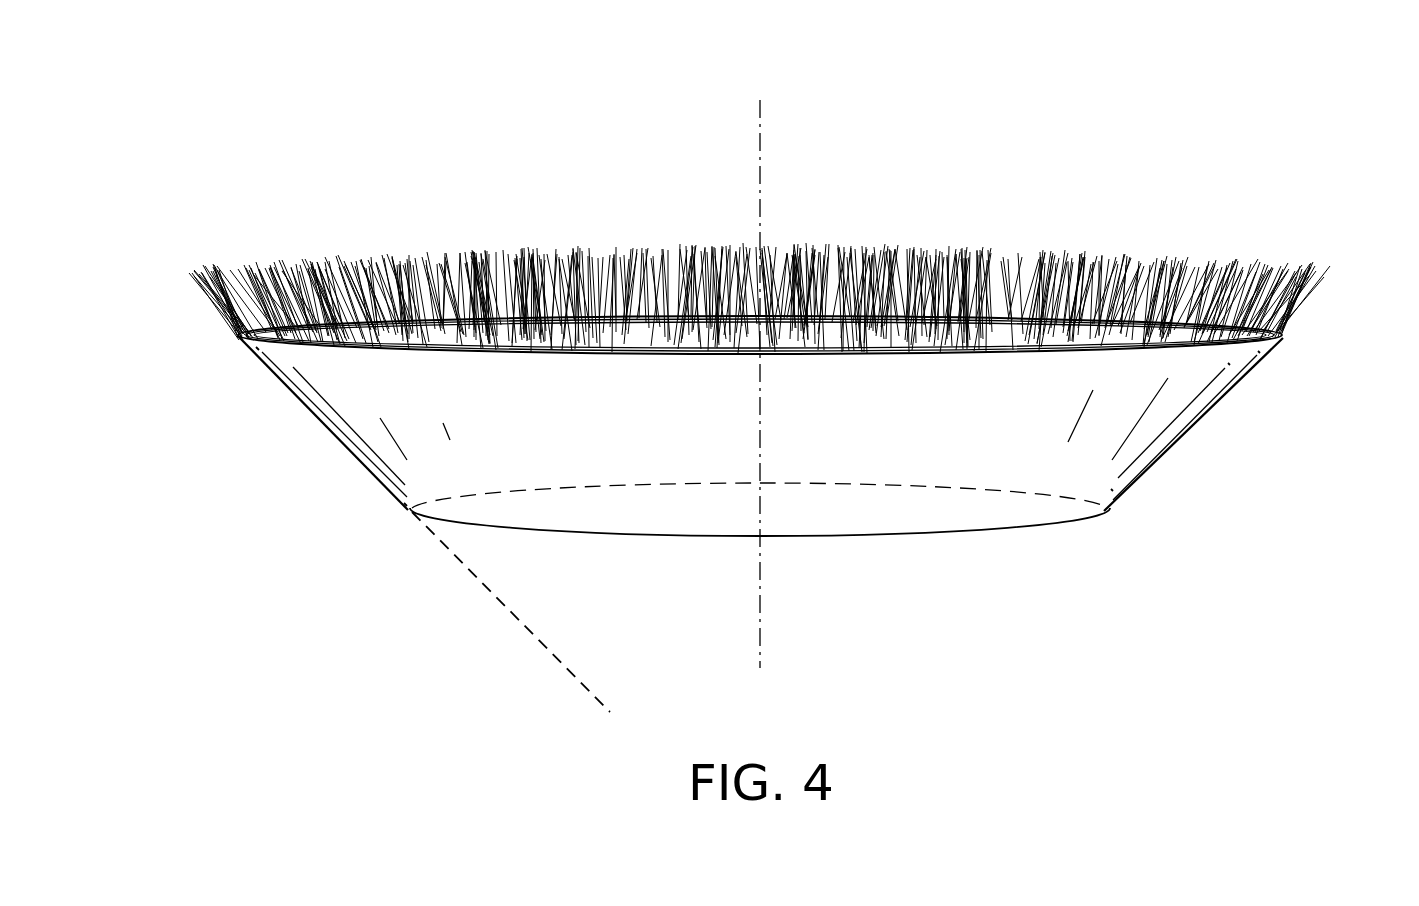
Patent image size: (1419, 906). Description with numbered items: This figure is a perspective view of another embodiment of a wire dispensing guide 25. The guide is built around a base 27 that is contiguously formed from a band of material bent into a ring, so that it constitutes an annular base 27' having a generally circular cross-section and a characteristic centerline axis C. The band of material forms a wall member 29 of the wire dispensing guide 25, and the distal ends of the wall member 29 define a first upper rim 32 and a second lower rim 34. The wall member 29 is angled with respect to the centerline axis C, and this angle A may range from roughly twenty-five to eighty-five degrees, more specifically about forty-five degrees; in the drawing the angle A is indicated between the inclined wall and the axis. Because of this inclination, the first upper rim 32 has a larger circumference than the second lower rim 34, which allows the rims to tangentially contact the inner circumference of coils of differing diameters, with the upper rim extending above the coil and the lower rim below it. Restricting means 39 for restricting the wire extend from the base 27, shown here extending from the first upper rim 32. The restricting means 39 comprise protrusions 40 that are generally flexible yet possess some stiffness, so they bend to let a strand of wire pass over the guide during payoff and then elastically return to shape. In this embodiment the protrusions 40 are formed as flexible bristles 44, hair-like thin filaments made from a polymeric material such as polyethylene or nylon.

The wire dispensing guide 25 is at (1062, 150).
The flexible bristles 44 is at (300, 246).
The protrusions 40 is at (1327, 258).
The restricting means 39 is at (1311, 310).
The first upper rim 32 is at (225, 338).
The wall member 29 is at (375, 460).
The base 27 is at (1184, 424).
The annular base 27' is at (1187, 441).
The second lower rim 34 is at (400, 530).
The angle of the wall member A is at (757, 630).
The centerline axis C is at (761, 404).